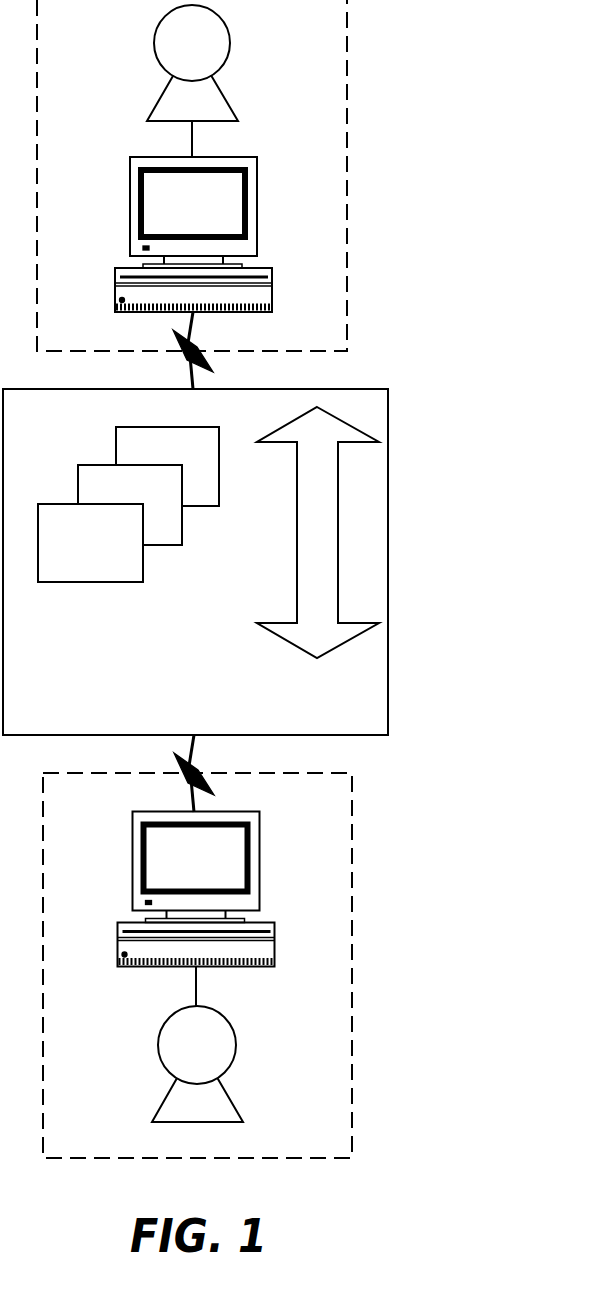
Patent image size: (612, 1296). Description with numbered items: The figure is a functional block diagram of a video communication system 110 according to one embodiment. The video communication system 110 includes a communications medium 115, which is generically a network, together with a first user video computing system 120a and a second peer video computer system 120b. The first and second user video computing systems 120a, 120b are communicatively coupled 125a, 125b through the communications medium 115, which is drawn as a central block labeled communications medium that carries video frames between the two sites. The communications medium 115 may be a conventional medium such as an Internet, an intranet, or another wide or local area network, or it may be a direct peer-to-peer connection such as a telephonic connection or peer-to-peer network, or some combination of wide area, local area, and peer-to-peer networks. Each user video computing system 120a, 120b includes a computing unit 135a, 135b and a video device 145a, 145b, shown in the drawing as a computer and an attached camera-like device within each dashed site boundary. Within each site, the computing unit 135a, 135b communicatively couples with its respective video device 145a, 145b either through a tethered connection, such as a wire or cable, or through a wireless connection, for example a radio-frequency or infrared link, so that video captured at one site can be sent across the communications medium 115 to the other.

The video communication system 110 is at (510, 1117).
The communications medium 115 is at (237, 562).
The first user video computing system 120a is at (237, 175).
The second peer video computer system 120b is at (241, 965).
The communicative coupling 125a is at (141, 350).
The communicative coupling 125b is at (143, 773).
The computing unit 135a is at (161, 234).
The computing unit 135b is at (164, 889).
The video device 145a is at (154, 81).
The video device 145b is at (158, 1044).